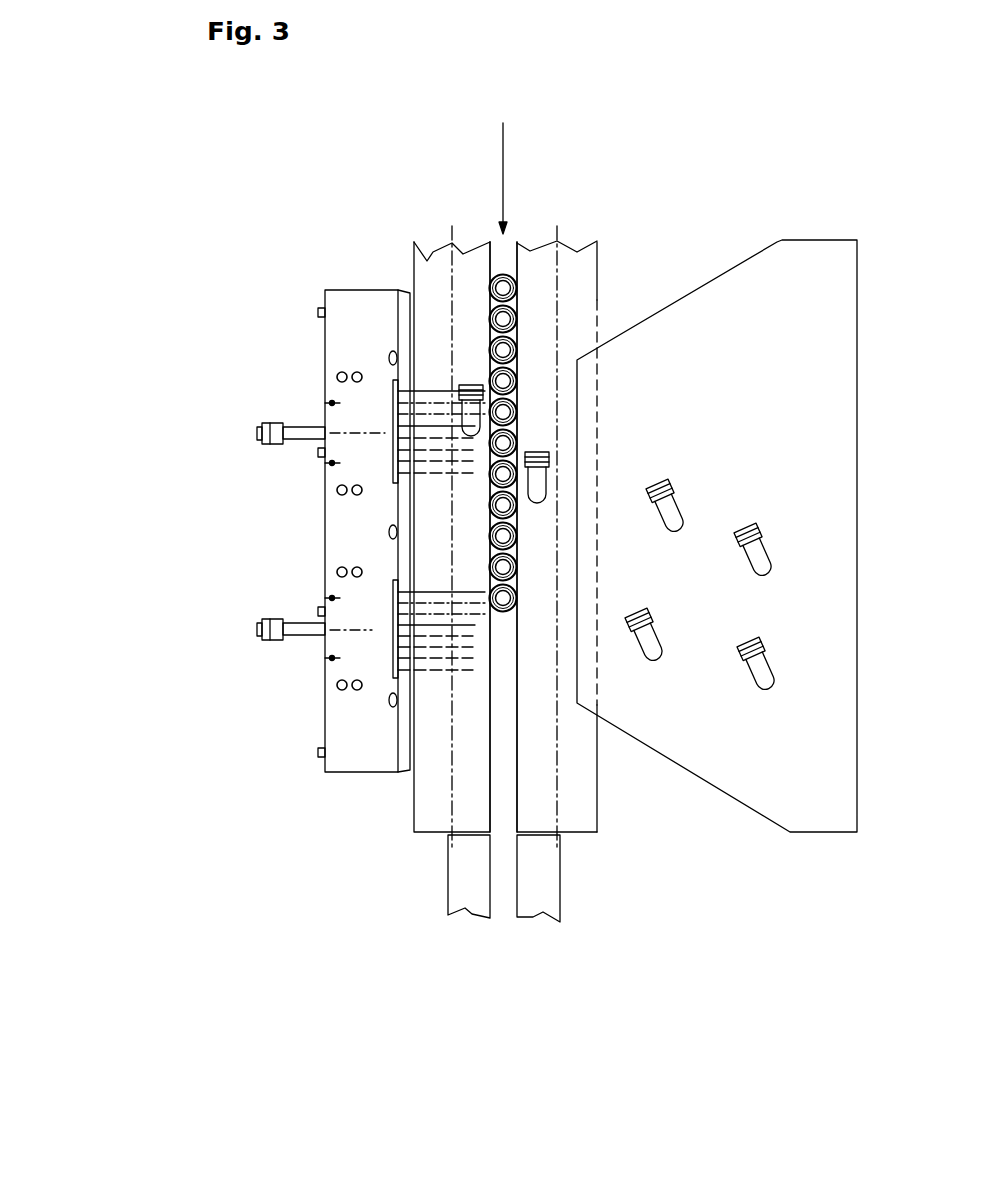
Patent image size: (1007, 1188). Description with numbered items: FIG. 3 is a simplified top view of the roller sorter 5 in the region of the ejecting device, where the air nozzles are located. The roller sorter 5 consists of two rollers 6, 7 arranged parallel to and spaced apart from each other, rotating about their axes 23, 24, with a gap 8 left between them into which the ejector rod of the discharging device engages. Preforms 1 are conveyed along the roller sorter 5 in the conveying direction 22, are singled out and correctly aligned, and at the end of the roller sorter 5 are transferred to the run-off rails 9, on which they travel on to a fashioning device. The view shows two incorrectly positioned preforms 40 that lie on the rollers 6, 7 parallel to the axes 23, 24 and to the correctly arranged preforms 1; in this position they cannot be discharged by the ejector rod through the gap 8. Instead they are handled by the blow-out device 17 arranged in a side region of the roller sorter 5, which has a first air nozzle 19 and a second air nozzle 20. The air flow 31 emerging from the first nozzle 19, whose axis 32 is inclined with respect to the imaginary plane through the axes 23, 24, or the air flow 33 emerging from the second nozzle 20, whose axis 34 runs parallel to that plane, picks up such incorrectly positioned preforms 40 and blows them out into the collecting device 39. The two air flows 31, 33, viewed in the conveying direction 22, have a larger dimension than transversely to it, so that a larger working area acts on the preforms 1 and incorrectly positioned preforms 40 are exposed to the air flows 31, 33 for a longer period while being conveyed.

The preform 1 is at (497, 607).
The roller sorter 5 is at (540, 236).
The roller 6 is at (577, 268).
The roller 7 is at (428, 283).
The gap 8 is at (503, 255).
The run-off rails 9 is at (547, 902).
The blow-out device 17 is at (347, 342).
The air nozzle 19 is at (390, 422).
The air nozzle 20 is at (392, 602).
The conveying direction 22 is at (502, 152).
The axis 23 is at (558, 232).
The axis 24 is at (452, 228).
The air flow 31 is at (430, 392).
The axis 32 is at (258, 433).
The air flow 33 is at (432, 657).
The axis 34 is at (258, 629).
The collecting device 39 is at (682, 725).
The incorrectly positioned preform 40 is at (535, 488).